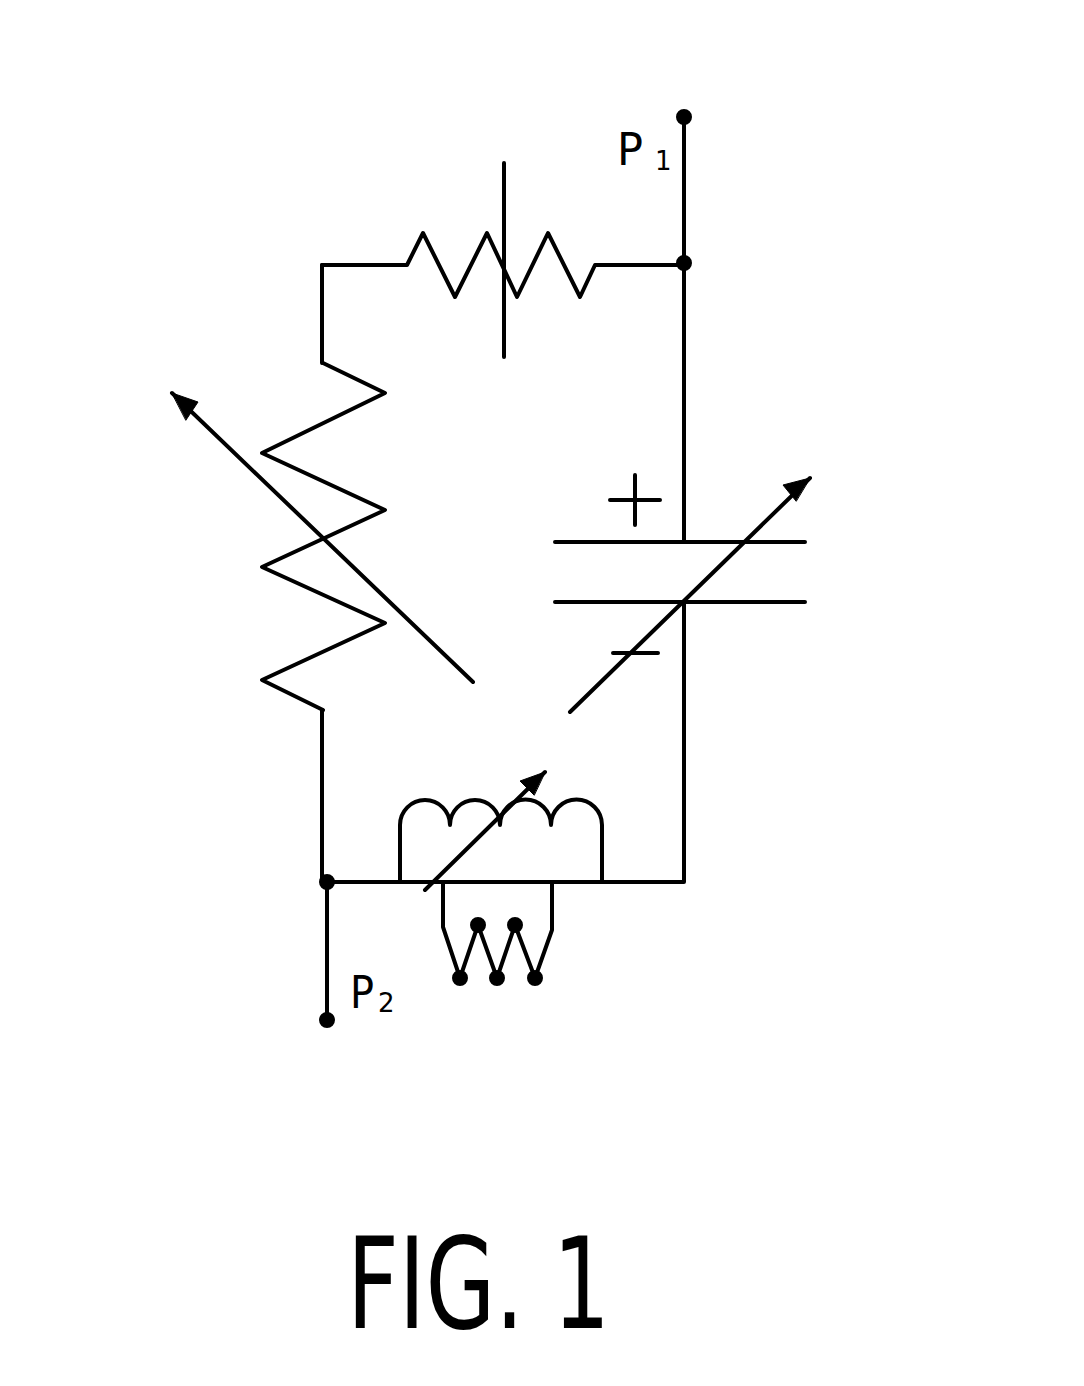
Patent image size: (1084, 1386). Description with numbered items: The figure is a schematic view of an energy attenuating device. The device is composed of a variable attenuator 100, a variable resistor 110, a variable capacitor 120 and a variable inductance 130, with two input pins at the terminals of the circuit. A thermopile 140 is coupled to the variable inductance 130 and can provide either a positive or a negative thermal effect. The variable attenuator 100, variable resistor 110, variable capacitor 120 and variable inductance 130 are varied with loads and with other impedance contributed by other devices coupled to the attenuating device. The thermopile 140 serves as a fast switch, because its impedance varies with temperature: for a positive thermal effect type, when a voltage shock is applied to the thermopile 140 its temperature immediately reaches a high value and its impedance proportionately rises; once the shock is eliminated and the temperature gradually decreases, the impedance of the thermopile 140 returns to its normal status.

The variable attenuator 100 is at (490, 222).
The variable resistor 110 is at (260, 567).
The variable capacitor 120 is at (710, 537).
The variable inductance 130 is at (607, 850).
The thermopile 140 is at (552, 937).